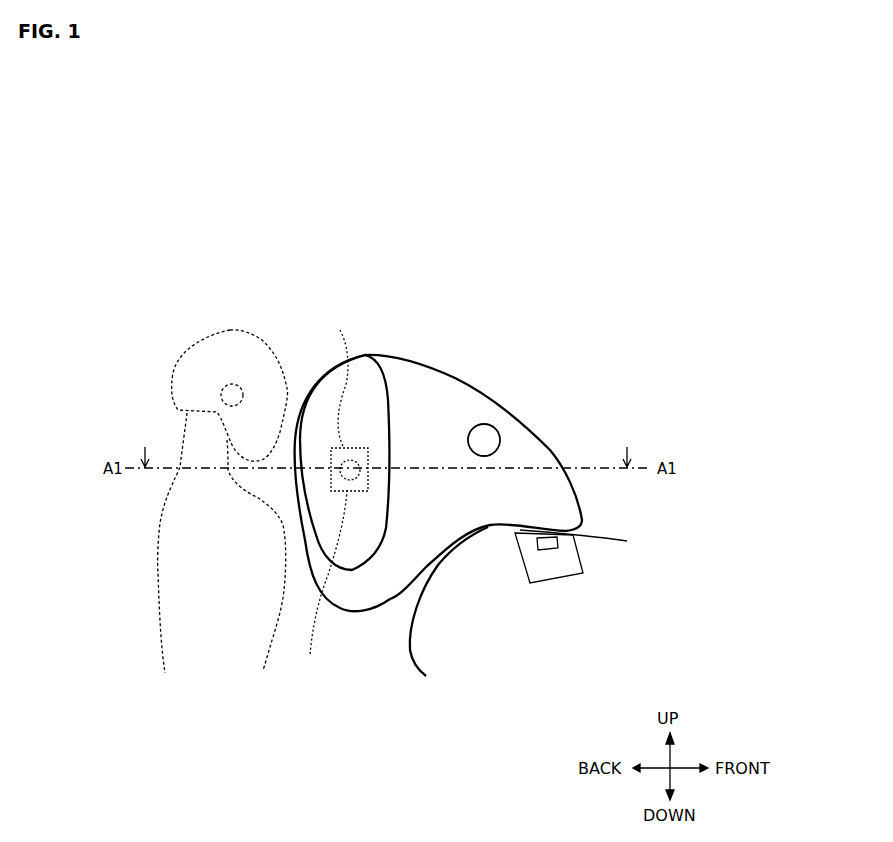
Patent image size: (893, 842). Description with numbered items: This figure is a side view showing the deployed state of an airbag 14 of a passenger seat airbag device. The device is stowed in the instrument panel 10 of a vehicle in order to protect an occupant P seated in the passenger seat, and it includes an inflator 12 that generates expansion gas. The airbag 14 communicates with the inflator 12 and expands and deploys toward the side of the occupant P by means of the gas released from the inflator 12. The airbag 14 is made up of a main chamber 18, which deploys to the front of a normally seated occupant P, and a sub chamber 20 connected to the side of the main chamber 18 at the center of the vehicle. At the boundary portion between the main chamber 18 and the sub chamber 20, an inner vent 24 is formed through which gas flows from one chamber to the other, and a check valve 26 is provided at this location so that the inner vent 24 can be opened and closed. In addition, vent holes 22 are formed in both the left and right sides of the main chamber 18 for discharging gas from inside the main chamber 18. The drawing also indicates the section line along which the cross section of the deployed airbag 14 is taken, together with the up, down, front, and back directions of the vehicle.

The instrument panel 10 is at (610, 537).
The inflator 12 is at (553, 580).
The airbag 14 is at (445, 475).
The main chamber 18 is at (440, 377).
The sub chamber 20 is at (374, 374).
The vent hole 22 is at (499, 428).
The inner vent 24 is at (326, 508).
The check valve 26 is at (348, 374).
The occupant P is at (229, 330).